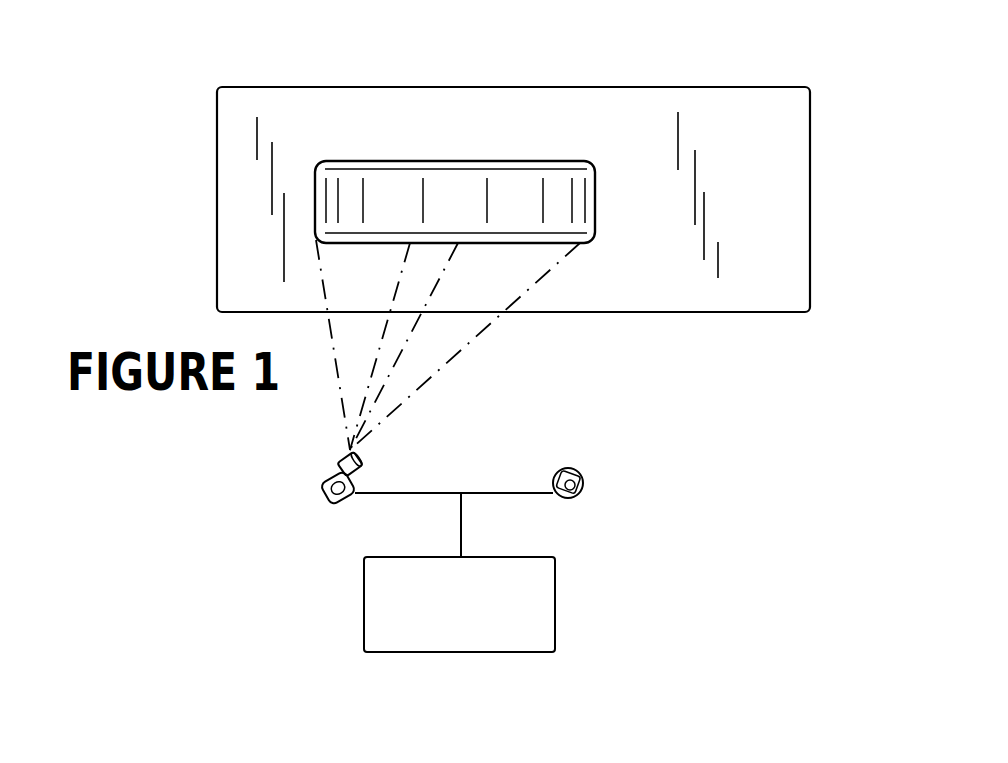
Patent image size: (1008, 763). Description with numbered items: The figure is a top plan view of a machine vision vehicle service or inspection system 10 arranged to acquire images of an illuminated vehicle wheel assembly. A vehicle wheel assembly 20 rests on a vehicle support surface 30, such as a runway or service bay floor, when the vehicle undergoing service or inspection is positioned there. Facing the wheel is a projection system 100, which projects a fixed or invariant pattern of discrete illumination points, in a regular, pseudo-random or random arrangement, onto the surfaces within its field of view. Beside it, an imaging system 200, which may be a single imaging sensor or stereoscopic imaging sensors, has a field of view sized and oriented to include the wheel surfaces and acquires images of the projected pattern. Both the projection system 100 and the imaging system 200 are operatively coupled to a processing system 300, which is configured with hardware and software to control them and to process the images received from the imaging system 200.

The machine vision vehicle service or inspection system 10 is at (548, 422).
The vehicle wheel assembly 20 is at (424, 152).
The vehicle support surface 30 is at (608, 313).
The projection system 100 is at (333, 503).
The imaging system 200 is at (573, 497).
The processing system 300 is at (459, 604).